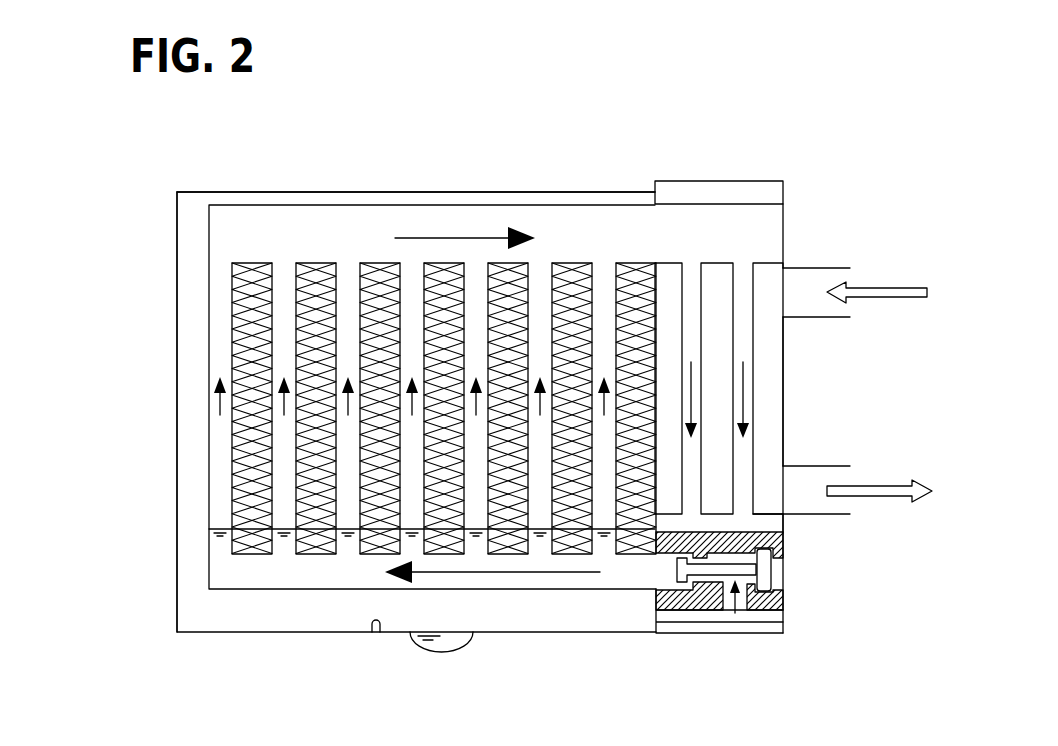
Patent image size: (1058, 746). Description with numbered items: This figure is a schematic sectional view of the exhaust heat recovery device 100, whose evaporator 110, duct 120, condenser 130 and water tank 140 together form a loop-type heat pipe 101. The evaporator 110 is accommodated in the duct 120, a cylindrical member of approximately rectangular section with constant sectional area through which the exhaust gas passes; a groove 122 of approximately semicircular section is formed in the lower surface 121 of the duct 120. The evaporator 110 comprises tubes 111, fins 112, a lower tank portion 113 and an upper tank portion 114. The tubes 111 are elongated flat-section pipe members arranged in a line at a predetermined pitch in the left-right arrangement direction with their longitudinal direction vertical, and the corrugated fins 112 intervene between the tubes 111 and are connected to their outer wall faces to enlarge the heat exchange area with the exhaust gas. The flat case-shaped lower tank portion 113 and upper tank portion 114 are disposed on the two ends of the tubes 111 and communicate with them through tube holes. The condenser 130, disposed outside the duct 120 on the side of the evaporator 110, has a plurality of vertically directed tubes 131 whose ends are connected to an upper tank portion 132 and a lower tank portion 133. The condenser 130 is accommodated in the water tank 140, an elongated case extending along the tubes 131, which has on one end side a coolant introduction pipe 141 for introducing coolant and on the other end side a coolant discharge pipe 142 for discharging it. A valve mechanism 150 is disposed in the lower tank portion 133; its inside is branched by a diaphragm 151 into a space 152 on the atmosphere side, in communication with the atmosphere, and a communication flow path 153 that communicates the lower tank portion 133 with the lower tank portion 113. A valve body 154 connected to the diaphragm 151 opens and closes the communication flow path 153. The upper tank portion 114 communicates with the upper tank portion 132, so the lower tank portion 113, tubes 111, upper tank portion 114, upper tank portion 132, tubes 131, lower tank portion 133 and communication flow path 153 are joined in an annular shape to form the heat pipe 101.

The exhaust heat recovery device 100 is at (276, 163).
The loop-type heat pipe 101 is at (347, 190).
The evaporator 110 is at (400, 197).
The tubes 111 is at (252, 300).
The fins 112 is at (232, 314).
The lower tank portion 113 is at (318, 575).
The upper tank portion 114 is at (462, 218).
The duct 120 is at (177, 240).
The lower surface 121 is at (380, 632).
The groove 122 is at (432, 650).
The condenser 130 is at (681, 188).
The tubes 131 is at (756, 350).
The upper tank portion 132 is at (722, 220).
The lower tank portion 133 is at (682, 614).
The water tank 140 is at (785, 190).
The coolant introduction pipe 141 is at (818, 268).
The coolant discharge pipe 142 is at (818, 466).
The valve mechanism 150 is at (708, 624).
The diaphragm 151 is at (783, 568).
The space on the atmosphere side 152 is at (773, 587).
The communication flow path 153 is at (717, 582).
The valve body 154 is at (677, 569).